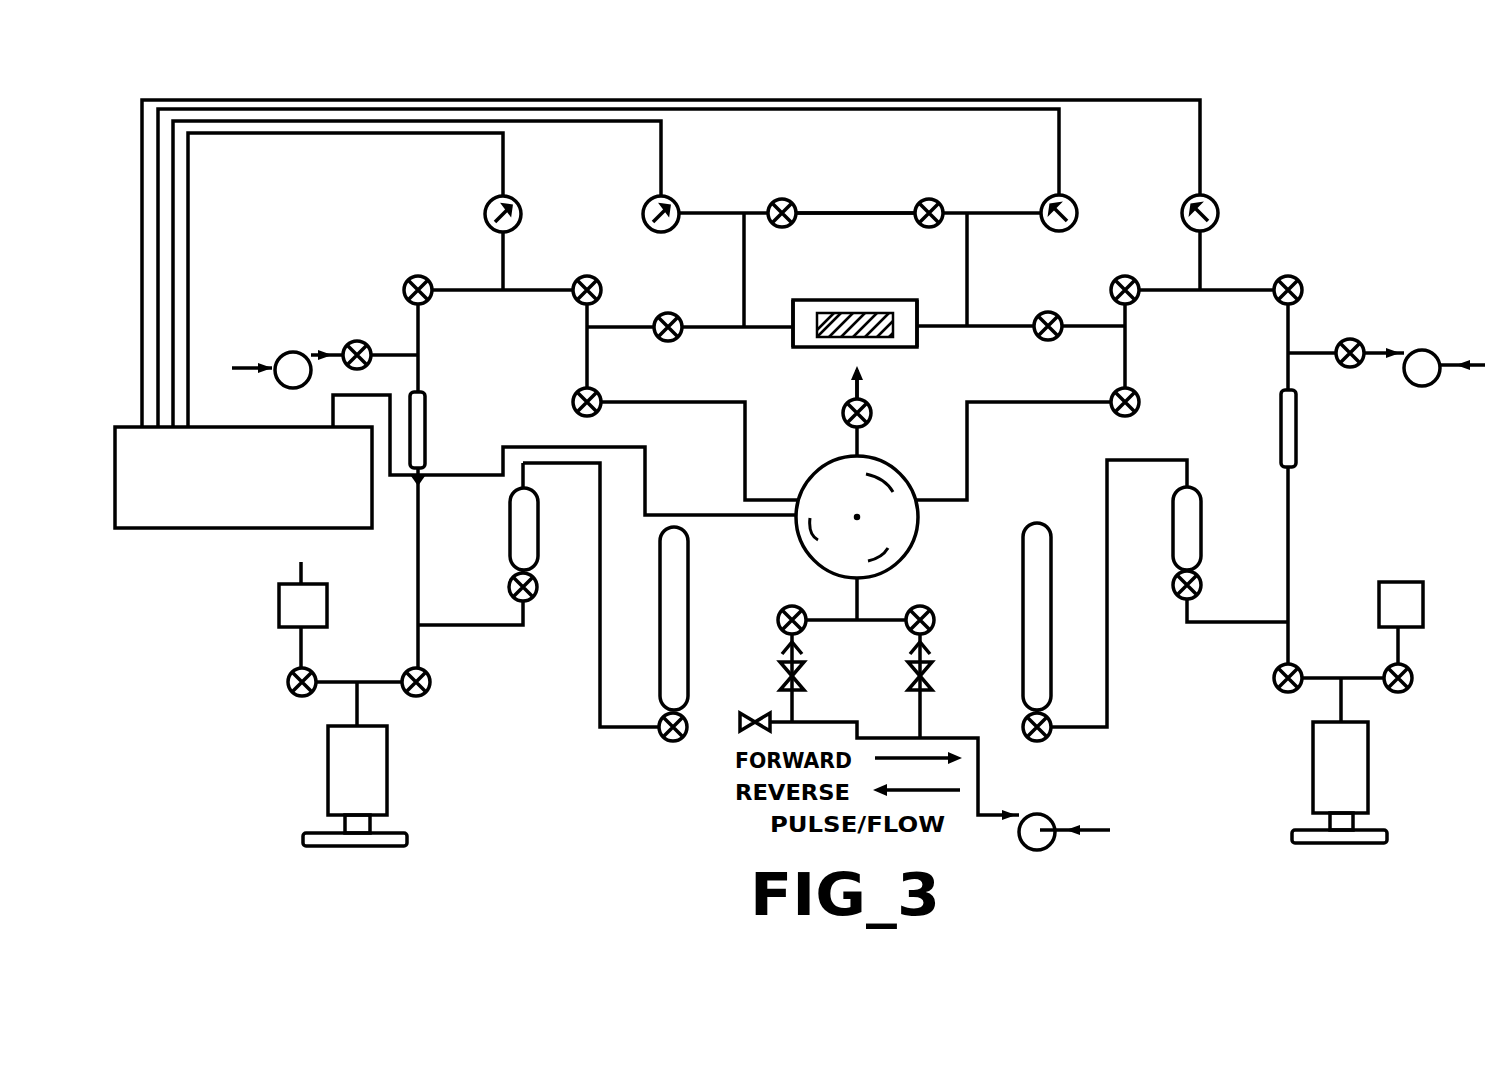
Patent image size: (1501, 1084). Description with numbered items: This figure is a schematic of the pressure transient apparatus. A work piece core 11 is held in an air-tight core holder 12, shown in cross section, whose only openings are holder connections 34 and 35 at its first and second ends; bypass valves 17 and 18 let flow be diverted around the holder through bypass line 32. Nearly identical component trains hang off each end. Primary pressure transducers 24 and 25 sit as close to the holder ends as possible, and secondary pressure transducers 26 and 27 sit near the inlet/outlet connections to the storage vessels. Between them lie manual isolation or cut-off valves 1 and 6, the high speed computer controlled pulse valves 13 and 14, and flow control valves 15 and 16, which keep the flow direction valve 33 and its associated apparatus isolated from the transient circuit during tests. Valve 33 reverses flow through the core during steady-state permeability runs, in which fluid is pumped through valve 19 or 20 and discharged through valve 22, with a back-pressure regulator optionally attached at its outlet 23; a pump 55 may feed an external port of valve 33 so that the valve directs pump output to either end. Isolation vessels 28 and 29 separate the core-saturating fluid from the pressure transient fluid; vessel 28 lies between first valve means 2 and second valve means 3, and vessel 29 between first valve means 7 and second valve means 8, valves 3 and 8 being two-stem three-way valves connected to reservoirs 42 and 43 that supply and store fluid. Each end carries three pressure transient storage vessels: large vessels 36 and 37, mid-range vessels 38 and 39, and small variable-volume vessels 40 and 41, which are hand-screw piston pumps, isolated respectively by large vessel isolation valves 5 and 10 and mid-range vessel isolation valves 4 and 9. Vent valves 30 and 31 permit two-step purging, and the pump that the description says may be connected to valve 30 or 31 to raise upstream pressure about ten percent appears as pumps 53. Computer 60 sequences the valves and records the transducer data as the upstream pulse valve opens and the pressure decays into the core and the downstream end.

The manual isolation valve 1 is at (671, 314).
The first valve means 2 is at (409, 275).
The second valve means 3 is at (430, 679).
The mid-range vessel isolation valve 4 is at (537, 588).
The large vessel isolation valve 5 is at (688, 720).
The manual isolation valve 6 is at (1048, 312).
The first valve means 7 is at (1302, 285).
The second valve means 8 is at (1273, 680).
The mid-range vessel isolation valve 9 is at (1177, 593).
The large vessel isolation valve 10 is at (1023, 722).
The work piece core 11 is at (869, 311).
The core holder 12 is at (821, 298).
The pulse valve 13 is at (591, 275).
The pulse valve 14 is at (1125, 276).
The flow control valve 15 is at (572, 402).
The flow control valve 16 is at (1139, 400).
The bypass valve 17 is at (783, 199).
The bypass valve 18 is at (933, 200).
The valve 19 is at (778, 620).
The valve 20 is at (935, 623).
The valve 22 is at (872, 413).
The outlet of valve 22 23 is at (853, 380).
The primary pressure transducer 24 is at (647, 204).
The primary pressure transducer 25 is at (1069, 199).
The secondary pressure transducer 26 is at (489, 205).
The secondary pressure transducer 27 is at (1213, 205).
The isolation vessel 28 is at (425, 406).
The isolation vessel 29 is at (1297, 423).
The vent valve 30 is at (348, 343).
The vent valve 31 is at (1365, 349).
The bypass line 32 is at (848, 211).
The flow direction valve 33 is at (918, 535).
The holder connection 34 is at (792, 336).
The holder connection 35 is at (918, 335).
The large vessel 36 is at (688, 578).
The large vessel 37 is at (1023, 593).
The mid-range vessel 38 is at (510, 527).
The mid-range vessel 39 is at (1202, 527).
The variable volume vessel 40 is at (328, 770).
The variable volume vessel 41 is at (1370, 758).
The reservoir 42 is at (300, 580).
The reservoir 43 is at (1403, 582).
The gas supply pump 53 is at (282, 355).
The pump 55 is at (1053, 817).
The computer 60 is at (190, 530).